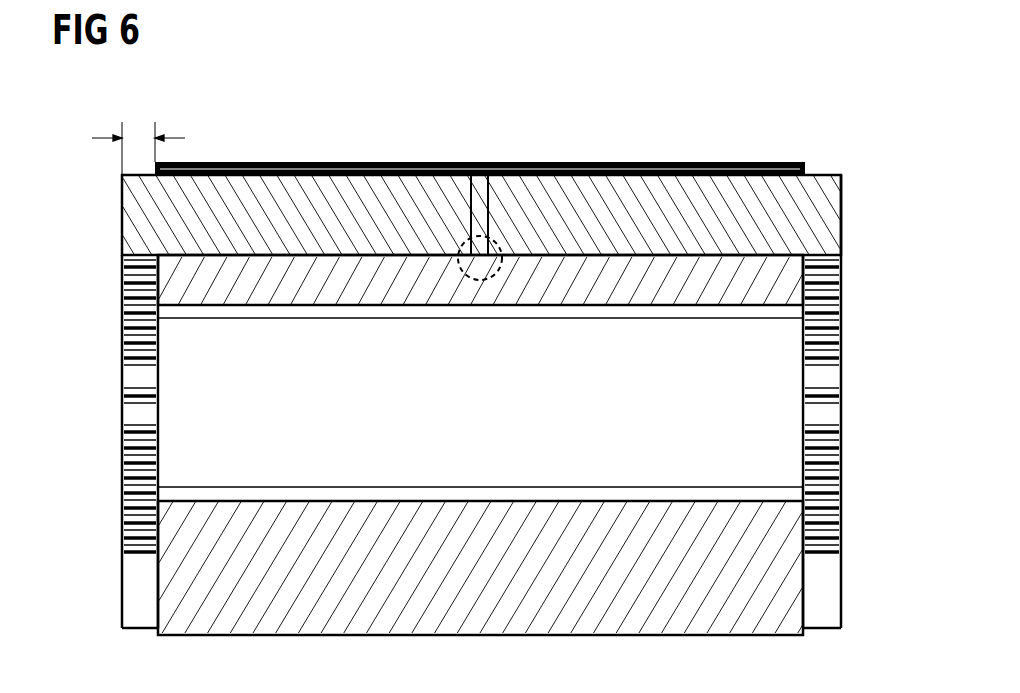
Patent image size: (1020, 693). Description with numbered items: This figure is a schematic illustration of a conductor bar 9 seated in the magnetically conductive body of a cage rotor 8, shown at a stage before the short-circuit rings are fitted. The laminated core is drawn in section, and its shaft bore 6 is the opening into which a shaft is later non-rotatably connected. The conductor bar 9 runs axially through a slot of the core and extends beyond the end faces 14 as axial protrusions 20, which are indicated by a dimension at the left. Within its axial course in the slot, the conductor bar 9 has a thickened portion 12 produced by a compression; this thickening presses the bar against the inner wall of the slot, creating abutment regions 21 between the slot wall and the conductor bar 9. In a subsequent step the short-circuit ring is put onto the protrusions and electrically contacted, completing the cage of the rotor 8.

The shaft bore 6 is at (790, 407).
The cage rotor 8 is at (733, 143).
The conductor bar 9 is at (827, 176).
The thickened portion 12 is at (480, 218).
The end face 14 is at (820, 288).
The axial protrusion 20 is at (136, 142).
The abutment region 21 is at (468, 212).